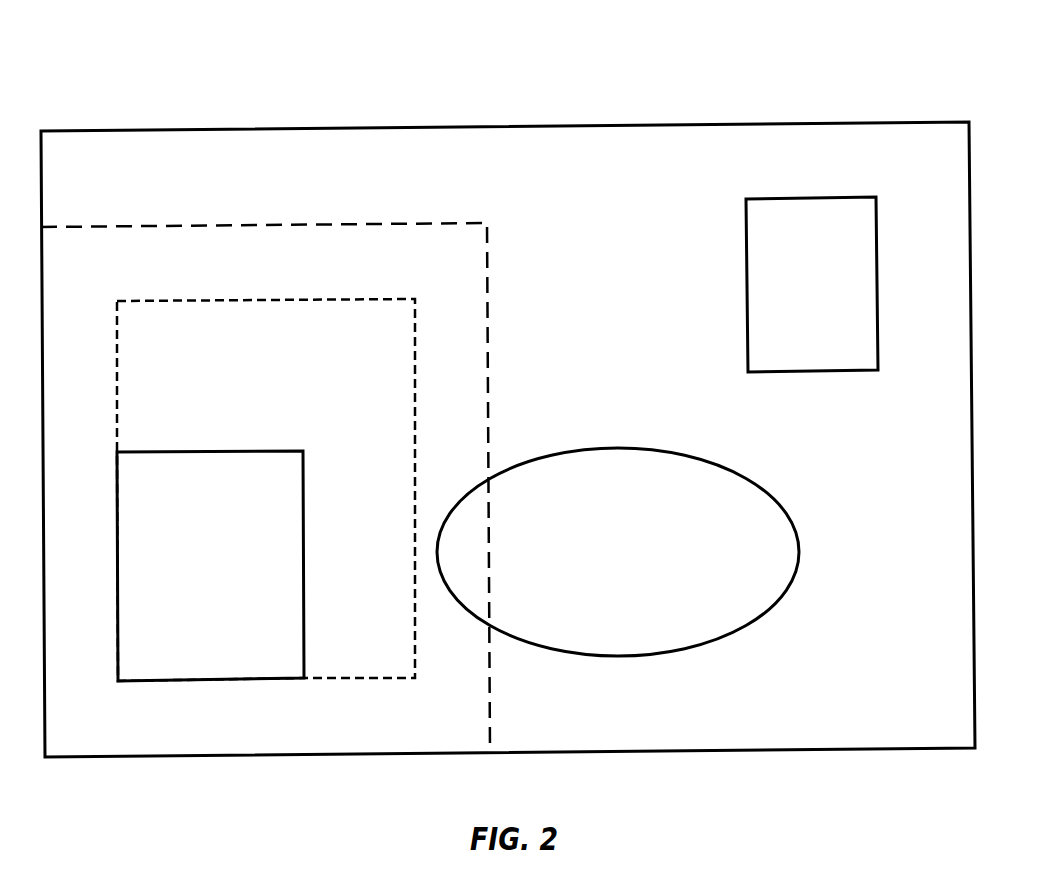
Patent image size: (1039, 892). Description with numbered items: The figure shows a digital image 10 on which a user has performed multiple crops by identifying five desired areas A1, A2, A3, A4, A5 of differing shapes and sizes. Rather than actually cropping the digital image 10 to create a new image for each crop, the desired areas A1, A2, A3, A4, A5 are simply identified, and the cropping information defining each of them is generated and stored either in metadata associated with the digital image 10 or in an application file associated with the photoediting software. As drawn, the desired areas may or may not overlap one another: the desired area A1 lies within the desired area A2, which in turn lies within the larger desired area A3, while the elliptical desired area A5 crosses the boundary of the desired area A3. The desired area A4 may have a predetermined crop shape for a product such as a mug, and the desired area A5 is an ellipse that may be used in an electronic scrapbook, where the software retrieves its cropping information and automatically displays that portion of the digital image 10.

The digital image 10 is at (903, 77).
The desired area A1 is at (210, 566).
The desired area A2 is at (266, 490).
The desired area A3 is at (265, 487).
The desired area A4 is at (812, 284).
The desired area A5 is at (618, 552).